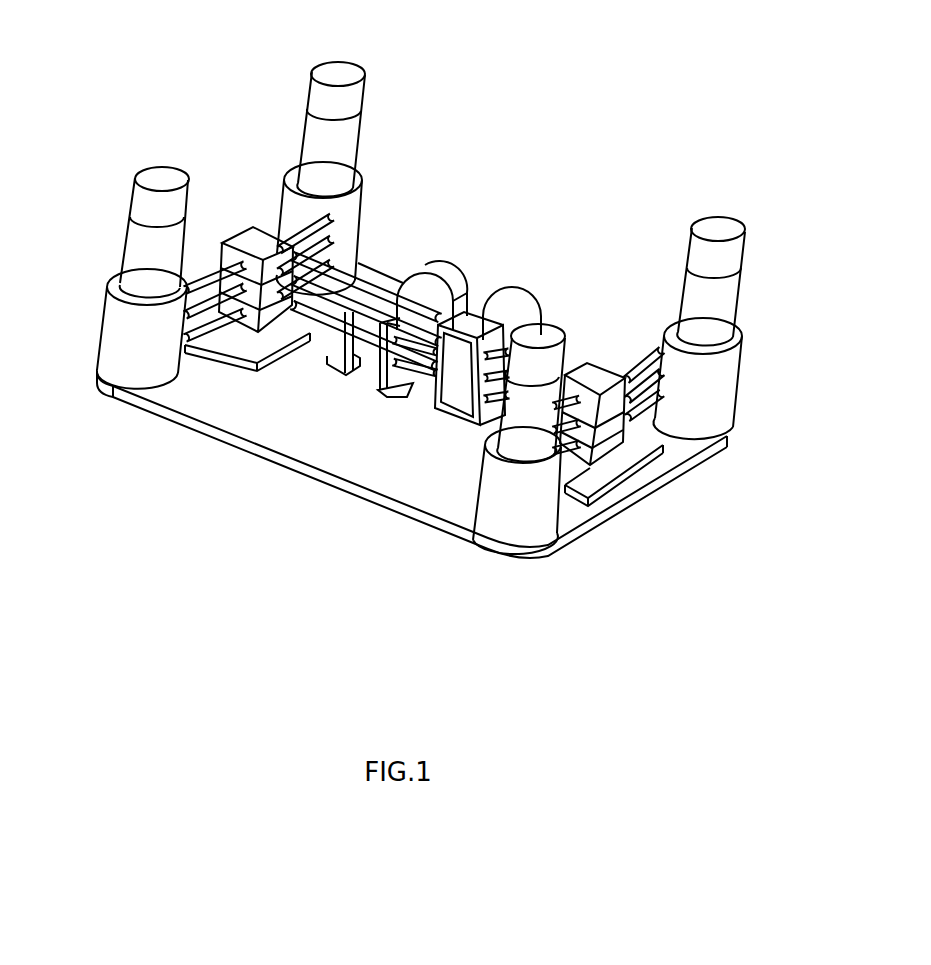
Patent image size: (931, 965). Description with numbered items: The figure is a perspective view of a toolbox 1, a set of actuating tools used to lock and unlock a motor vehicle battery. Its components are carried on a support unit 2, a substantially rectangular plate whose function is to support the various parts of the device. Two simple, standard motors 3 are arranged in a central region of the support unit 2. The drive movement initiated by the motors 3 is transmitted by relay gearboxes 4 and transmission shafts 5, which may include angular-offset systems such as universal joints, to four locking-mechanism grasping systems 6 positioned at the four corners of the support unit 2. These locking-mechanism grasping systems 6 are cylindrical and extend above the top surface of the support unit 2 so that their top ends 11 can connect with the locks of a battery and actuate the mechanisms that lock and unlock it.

The toolbox 1 is at (454, 198).
The support unit 2 is at (233, 412).
The motors 3 is at (413, 273).
The relay gearboxes 4 is at (236, 228).
The transmission shafts 5 is at (647, 355).
The locking-mechanism grasping systems 6 is at (138, 247).
The top ends 11 is at (158, 175).